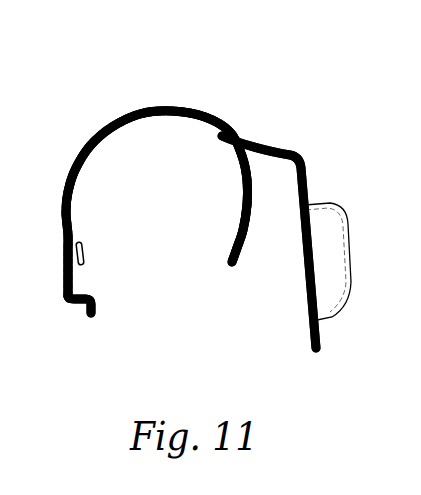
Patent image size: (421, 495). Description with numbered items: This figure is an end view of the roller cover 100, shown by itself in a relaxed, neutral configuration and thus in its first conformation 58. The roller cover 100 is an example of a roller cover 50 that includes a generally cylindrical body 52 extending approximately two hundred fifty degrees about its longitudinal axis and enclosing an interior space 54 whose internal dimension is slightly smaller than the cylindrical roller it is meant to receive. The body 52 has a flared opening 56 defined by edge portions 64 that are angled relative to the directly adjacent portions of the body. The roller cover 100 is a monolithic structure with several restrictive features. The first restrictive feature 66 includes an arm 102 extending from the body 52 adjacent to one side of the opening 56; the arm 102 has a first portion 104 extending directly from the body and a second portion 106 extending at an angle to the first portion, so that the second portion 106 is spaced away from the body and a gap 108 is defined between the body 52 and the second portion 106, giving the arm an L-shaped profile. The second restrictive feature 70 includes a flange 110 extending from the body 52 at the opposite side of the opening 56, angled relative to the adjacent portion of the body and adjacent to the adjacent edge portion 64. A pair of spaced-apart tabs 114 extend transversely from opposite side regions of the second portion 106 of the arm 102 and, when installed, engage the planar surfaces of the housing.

The roller cover 50 is at (213, 87).
The generally cylindrical body 52 is at (125, 108).
The interior space 54 is at (171, 198).
The flared opening 56 is at (163, 240).
The first conformation 58 is at (118, 54).
The edge portions 64 is at (228, 258).
The first restrictive feature 66 is at (331, 338).
The second restrictive feature 70 is at (350, 257).
The roller cover 100 is at (172, 75).
The arm 102 is at (299, 153).
The first portion 104 is at (265, 148).
The second portion 106 is at (304, 183).
The gap 108 is at (263, 240).
The flange 110 is at (62, 272).
The tabs 114 is at (350, 283).